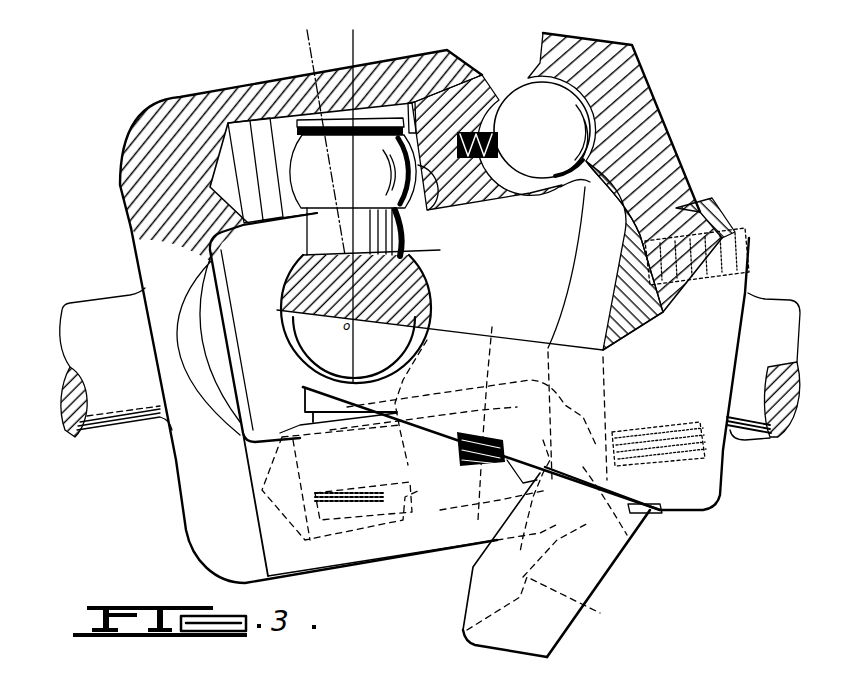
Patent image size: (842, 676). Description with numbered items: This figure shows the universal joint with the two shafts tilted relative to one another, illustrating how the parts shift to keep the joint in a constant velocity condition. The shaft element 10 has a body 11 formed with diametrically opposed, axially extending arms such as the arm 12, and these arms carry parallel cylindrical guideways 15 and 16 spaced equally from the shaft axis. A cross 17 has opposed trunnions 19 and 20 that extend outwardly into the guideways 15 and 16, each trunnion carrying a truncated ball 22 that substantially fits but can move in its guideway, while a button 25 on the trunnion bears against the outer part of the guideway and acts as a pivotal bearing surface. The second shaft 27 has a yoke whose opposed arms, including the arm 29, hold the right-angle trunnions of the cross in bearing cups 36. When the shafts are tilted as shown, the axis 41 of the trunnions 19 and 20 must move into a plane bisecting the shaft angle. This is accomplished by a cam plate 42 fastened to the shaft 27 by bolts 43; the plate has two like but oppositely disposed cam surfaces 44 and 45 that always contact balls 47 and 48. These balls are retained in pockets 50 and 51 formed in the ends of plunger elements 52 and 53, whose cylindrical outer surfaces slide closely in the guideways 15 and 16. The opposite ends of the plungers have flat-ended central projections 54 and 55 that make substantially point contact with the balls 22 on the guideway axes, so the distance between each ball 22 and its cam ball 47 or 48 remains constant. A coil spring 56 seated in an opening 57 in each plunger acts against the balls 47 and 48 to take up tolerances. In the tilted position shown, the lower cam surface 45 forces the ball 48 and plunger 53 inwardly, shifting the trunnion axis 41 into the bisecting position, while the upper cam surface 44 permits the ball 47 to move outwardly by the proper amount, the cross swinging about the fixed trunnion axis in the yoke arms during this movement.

The shaft element 10 is at (112, 434).
The body 11 is at (128, 185).
The arm 12 is at (258, 90).
The cylindrical guideway 15 is at (389, 100).
The cylindrical guideway 16 is at (400, 562).
The cross 17 is at (280, 315).
The trunnion 19 is at (398, 235).
The trunnion 20 is at (300, 393).
The truncated ball 22 is at (300, 198).
The button 25 is at (360, 106).
The second shaft 27 is at (757, 437).
The arm 29 is at (525, 385).
The bearing cup 36 is at (305, 350).
The trunnion axis 41 is at (357, 355).
The cam plate 42 is at (657, 131).
The bolt 43 is at (713, 213).
The cam surface 44 is at (620, 188).
The cam surface 45 is at (580, 606).
The ball 47 is at (600, 96).
The ball 48 is at (630, 548).
The pocket 50 is at (507, 97).
The pocket 51 is at (487, 515).
The plunger element 52 is at (537, 188).
The plunger element 53 is at (493, 350).
The central projection 54 is at (427, 200).
The central projection 55 is at (413, 397).
The coil spring 56 is at (476, 160).
The opening 57 is at (455, 225).